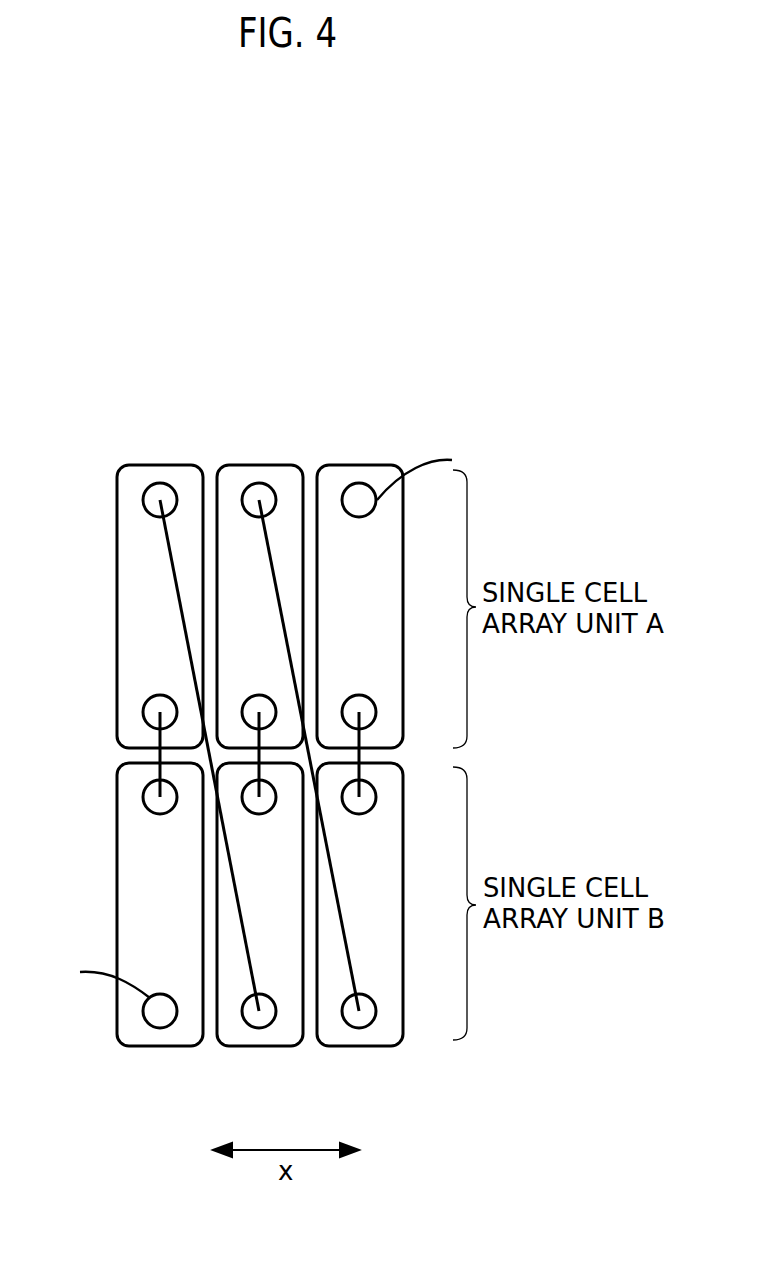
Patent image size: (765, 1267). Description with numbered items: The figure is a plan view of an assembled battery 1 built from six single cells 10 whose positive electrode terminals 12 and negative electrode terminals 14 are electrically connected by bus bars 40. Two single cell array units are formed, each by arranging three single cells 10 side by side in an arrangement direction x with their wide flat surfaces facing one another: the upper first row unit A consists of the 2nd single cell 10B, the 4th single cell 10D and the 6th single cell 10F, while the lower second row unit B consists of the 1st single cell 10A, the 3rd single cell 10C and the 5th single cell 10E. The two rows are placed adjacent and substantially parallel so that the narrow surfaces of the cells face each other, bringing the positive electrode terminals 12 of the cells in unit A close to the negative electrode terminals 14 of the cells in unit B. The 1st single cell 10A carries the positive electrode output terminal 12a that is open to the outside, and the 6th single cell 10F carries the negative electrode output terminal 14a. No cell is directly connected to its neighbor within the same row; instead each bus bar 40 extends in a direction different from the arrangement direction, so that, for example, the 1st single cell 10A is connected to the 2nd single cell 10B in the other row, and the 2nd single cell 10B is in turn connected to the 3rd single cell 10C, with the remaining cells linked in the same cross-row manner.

The assembled battery 1 is at (17, 413).
The single cell 10 is at (162, 946).
The 1st single cell 10A is at (178, 1050).
The 2nd single cell 10B is at (148, 462).
The 3rd single cell 10C is at (261, 1052).
The 4th single cell 10D is at (248, 462).
The 5th single cell 10E is at (361, 1052).
The 6th single cell 10F is at (347, 462).
The positive electrode terminal 12 is at (143, 712).
The positive electrode output terminal 12a is at (95, 974).
The negative electrode terminal 14 is at (143, 500).
The negative electrode output terminal 14a is at (434, 469).
The bus bar 40 is at (170, 556).